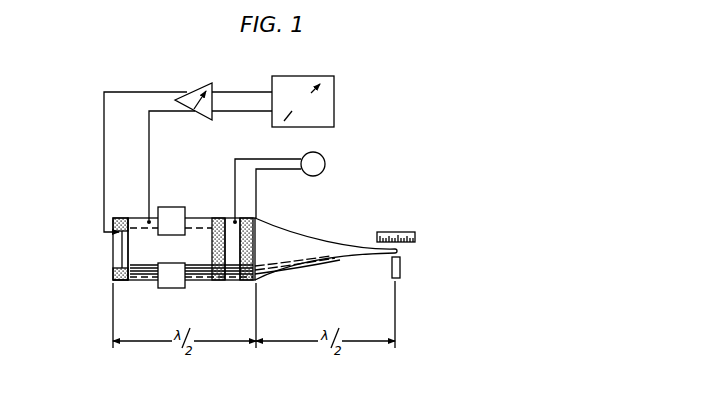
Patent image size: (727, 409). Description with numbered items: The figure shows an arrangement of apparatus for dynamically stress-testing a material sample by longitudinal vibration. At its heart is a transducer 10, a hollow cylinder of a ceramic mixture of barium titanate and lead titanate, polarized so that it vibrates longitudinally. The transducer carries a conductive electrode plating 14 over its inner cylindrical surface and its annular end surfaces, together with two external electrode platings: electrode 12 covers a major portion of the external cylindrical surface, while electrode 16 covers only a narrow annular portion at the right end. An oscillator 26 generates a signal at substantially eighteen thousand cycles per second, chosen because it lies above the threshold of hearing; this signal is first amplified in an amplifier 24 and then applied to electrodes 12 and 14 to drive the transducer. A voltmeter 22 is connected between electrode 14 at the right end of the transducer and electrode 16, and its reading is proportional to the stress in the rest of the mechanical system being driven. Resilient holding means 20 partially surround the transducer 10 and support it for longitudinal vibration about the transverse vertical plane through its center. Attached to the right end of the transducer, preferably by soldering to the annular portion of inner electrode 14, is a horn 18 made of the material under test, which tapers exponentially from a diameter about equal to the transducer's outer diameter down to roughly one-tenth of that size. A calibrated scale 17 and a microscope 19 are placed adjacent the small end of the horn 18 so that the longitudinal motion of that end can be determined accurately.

The transducer 10 is at (123, 283).
The external conductive electrode plating 12 is at (139, 222).
The conductive electrode plating 14 is at (120, 238).
The external conductive electrode plating 16 is at (235, 277).
The calibrated scale 17 is at (407, 233).
The horn 18 is at (302, 238).
The microscope 19 is at (400, 270).
The resilient holding means 20 is at (167, 210).
The voltmeter 22 is at (325, 170).
The amplifier 24 is at (203, 83).
The oscillator 26 is at (302, 78).